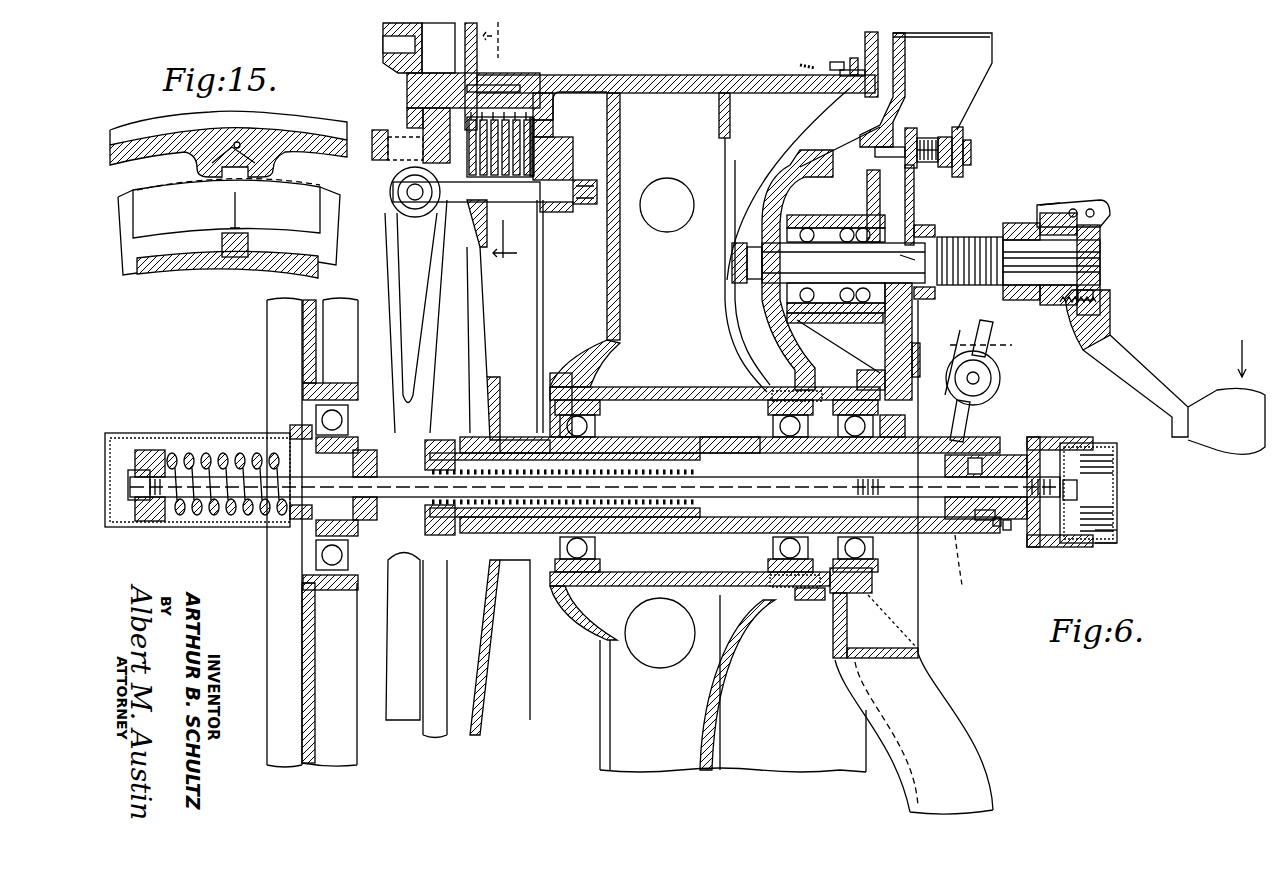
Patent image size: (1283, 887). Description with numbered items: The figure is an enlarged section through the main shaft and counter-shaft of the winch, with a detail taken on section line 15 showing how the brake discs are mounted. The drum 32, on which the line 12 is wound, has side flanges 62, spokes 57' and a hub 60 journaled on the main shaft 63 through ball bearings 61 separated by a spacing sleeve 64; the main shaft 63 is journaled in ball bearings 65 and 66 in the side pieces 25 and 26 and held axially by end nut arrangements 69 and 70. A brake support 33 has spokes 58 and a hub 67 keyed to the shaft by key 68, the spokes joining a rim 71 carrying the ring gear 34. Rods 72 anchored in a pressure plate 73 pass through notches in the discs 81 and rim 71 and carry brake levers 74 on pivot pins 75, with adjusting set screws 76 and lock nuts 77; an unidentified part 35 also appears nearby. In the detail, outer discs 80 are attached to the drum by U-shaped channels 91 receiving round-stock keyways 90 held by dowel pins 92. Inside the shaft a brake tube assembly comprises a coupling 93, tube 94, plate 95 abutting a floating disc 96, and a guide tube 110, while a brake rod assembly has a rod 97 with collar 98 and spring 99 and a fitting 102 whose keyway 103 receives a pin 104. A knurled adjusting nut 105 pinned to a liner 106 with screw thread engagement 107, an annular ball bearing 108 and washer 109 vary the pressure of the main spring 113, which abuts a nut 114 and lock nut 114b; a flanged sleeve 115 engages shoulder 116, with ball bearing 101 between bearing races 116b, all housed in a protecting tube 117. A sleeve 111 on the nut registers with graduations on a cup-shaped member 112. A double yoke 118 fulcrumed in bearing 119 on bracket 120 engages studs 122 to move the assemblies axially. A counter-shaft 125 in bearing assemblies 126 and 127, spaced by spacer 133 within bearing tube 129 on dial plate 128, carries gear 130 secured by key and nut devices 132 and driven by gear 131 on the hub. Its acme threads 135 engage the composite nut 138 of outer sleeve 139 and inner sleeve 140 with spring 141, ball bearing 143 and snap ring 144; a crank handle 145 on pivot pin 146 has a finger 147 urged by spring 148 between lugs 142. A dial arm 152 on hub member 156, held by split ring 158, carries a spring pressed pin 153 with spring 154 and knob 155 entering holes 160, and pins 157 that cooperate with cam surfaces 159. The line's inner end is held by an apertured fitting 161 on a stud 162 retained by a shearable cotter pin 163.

In FIG. 6, the line 12 is at (808, 63).
In FIG. 6, the section line 15— 15 is at (504, 149).
In FIG. 6, the side piece 25 is at (285, 340).
In FIG. 6, the side piece 26 is at (994, 60).
In FIG. 6, the drum 32 is at (712, 75).
In FIG. 6, the brake support 33 is at (473, 236).
In FIG. 6, the ring gear 34 is at (407, 101).
In FIG. 6, the clutch ring 35 is at (553, 130).
In FIG. 6, the spokes 57' is at (733, 432).
In FIG. 6, the spokes 58 is at (486, 317).
In FIG. 6, the hub 60 is at (672, 387).
In FIG. 6, the ball bearings 61 is at (590, 426).
In FIG. 6, the side flanges 62 is at (478, 45).
In FIG. 6, the main shaft 63 is at (672, 437).
In FIG. 6, the spacing sleeve 64 is at (712, 437).
In FIG. 6, the ball bearing 65 is at (335, 410).
In FIG. 6, the ball bearing 66 is at (865, 420).
In FIG. 6, the hub 67 is at (510, 430).
In FIG. 6, the key 68 is at (510, 437).
In FIG. 6, the end nut arrangement 69 is at (896, 436).
In FIG. 6, the end nut arrangement 70 is at (300, 425).
In FIG. 6, the rim 71 is at (423, 125).
In FIG. 6, the rods 72 is at (510, 205).
In FIG. 6, the pressure plate 73 is at (573, 162).
In FIG. 6, the brake levers 74 is at (390, 256).
In FIG. 6, the pivot pins 75 is at (407, 192).
In FIG. 6, the adjusting set screws 76 is at (380, 160).
In FIG. 6, the lock nuts 77 is at (375, 135).
In FIG. 6, the outer discs 80 is at (522, 118).
In FIG. 6, the discs 81 is at (506, 118).
In FIG. 15, the keyways 90 is at (205, 162).
In FIG. 6, the keyways 90 is at (553, 104).
In FIG. 15, the U-shaped channels 91 is at (252, 158).
In FIG. 15, the dowel pins 92 is at (236, 142).
In FIG. 6, the dowel pins 92 is at (470, 88).
In FIG. 6, the coupling 93 is at (990, 520).
In FIG. 6, the tube 94 is at (750, 533).
In FIG. 6, the flange or plate 95 is at (440, 525).
In FIG. 6, the floating disc 96 is at (437, 440).
In FIG. 6, the rod 97 is at (722, 497).
In FIG. 6, the collar 98 is at (625, 517).
In FIG. 6, the spring 99 is at (545, 512).
In FIG. 6, the annular ball bearing 101 is at (352, 447).
In FIG. 6, the fitting 102 is at (872, 570).
In FIG. 6, the keyway 103 is at (975, 455).
In FIG. 6, the pin 104 is at (985, 460).
In FIG. 6, the knurled adjusting nut 105 is at (1080, 545).
In FIG. 6, the liner 106 is at (1035, 547).
In FIG. 6, the screw thread engagement 107 is at (1077, 500).
In FIG. 6, the annular ball bearing 108 is at (1010, 530).
In FIG. 6, the washer 109 is at (995, 526).
In FIG. 6, the guide tube 110 is at (920, 530).
In FIG. 6, the sleeve 111 is at (1118, 545).
In FIG. 6, the cup-shaped member 112 is at (1118, 528).
In FIG. 6, the main spring 113 is at (235, 515).
In FIG. 6, the nut 114 is at (150, 521).
In FIG. 6, the lock nut 114b is at (140, 470).
In FIG. 6, the flanged sleeve 115 is at (345, 580).
In FIG. 6, the shoulder 116 is at (365, 522).
In FIG. 6, the bearing races 116b is at (365, 450).
In FIG. 6, the protecting tube 117 is at (215, 433).
In FIG. 6, the double yoke 118 is at (995, 350).
In FIG. 6, the bearing 119 is at (1000, 385).
In FIG. 6, the bracket 120 is at (1012, 345).
In FIG. 6, the studs 122 is at (963, 562).
In FIG. 6, the counter-shaft 125 is at (843, 263).
In FIG. 6, the bearing assembly 126 is at (793, 293).
In FIG. 6, the bearing assembly 127 is at (855, 215).
In FIG. 6, the dial plate 128 is at (885, 330).
In FIG. 6, the bearing tube 129 is at (752, 343).
In FIG. 6, the gear 130 is at (812, 150).
In FIG. 6, the gear 131 is at (808, 600).
In FIG. 6, the key and nut devices 132 is at (731, 258).
In FIG. 6, the spacer 133 is at (840, 313).
In FIG. 6, the acme machine threads 135 is at (960, 235).
In FIG. 6, the composite nut member 138 is at (1075, 203).
In FIG. 6, the outer sleeve 139 is at (1020, 223).
In FIG. 6, the inner sleeve 140 is at (1050, 213).
In FIG. 6, the spring 141 is at (1062, 240).
In FIG. 6, the lugs 142 is at (1112, 318).
In FIG. 6, the ball bearing 143 is at (1100, 304).
In FIG. 6, the snap ring 144 is at (958, 332).
In FIG. 6, the crank handle 145 is at (1243, 455).
In FIG. 6, the pivot pin 146 is at (1100, 240).
In FIG. 6, the finger 147 is at (1060, 200).
In FIG. 6, the spring 148 is at (1100, 295).
In FIG. 6, the arm 152 is at (913, 128).
In FIG. 6, the spring pressed pin 153 is at (942, 137).
In FIG. 6, the spring 154 is at (930, 138).
In FIG. 6, the knob 155 is at (972, 135).
In FIG. 6, the hub member 156 is at (915, 235).
In FIG. 6, the pins 157 is at (930, 228).
In FIG. 6, the split ring 158 is at (913, 362).
In FIG. 6, the cam surfaces 159 is at (920, 275).
In FIG. 6, the holes 160 is at (872, 128).
In FIG. 6, the apertured fitting 161 is at (855, 78).
In FIG. 6, the stud 162 is at (853, 58).
In FIG. 6, the cotter pin 163 is at (838, 62).